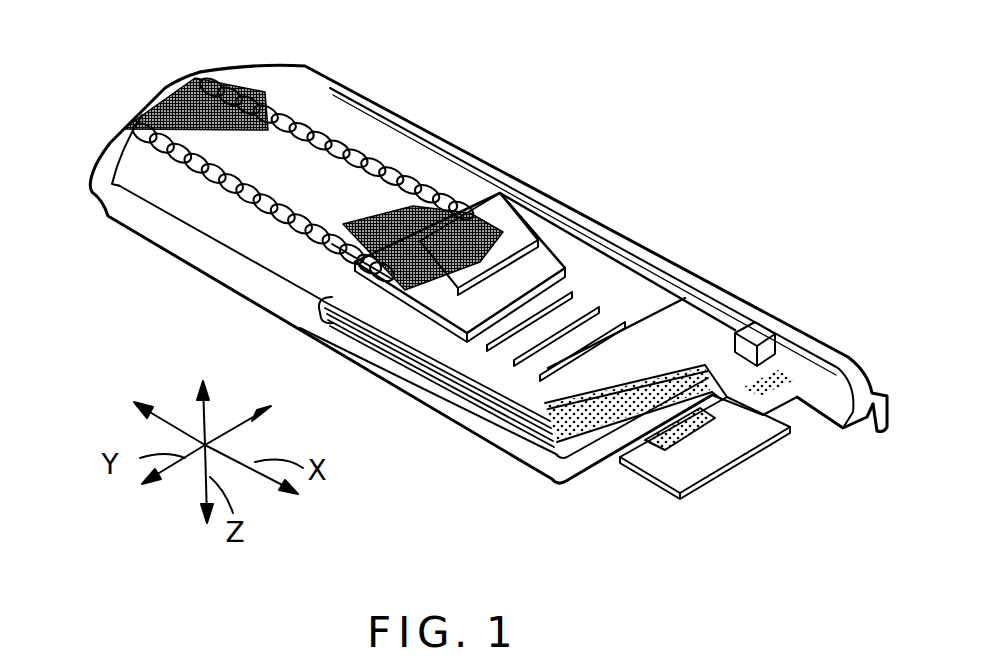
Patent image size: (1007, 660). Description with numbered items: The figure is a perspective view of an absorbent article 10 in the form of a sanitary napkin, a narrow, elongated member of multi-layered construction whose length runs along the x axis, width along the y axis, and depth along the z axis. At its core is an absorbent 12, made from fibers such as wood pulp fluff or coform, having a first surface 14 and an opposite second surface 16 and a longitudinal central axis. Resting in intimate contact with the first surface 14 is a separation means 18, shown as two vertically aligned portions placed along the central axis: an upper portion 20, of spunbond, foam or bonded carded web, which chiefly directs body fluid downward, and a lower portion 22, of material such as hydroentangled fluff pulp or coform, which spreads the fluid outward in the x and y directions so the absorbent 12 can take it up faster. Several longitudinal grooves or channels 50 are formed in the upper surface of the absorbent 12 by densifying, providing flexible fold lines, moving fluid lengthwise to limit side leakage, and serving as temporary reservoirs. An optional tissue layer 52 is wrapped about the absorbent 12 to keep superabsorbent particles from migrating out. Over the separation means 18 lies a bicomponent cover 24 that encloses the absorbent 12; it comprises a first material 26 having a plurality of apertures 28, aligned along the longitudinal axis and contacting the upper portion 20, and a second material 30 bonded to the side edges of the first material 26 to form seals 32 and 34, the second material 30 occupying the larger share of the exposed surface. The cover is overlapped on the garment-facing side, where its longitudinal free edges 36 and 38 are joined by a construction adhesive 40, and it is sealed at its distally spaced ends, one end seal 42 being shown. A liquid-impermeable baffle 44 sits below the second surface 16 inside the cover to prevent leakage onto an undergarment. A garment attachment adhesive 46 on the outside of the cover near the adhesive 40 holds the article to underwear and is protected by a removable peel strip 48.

The absorbent article 10 is at (684, 74).
The absorbent 12 is at (663, 312).
The first surface 14 is at (631, 279).
The second surface 16 is at (698, 338).
The separation means 18 is at (327, 320).
The upper portion 20 is at (370, 305).
The lower portion 22 is at (428, 355).
The bicomponent cover 24 is at (352, 100).
The first material 26 is at (293, 147).
The apertures 28 is at (197, 90).
The second material 30 is at (442, 148).
The seal 32 is at (345, 142).
The seal 34 is at (224, 187).
The longitudinal free edge 36 is at (717, 376).
The longitudinal free edge 38 is at (643, 440).
The construction adhesive 40 is at (775, 442).
The end seal 42 is at (107, 140).
The liquid-impermeable baffle 44 is at (593, 467).
The garment attachment adhesive 46 is at (692, 440).
The peel strip 48 is at (727, 455).
The grooves or channels 50 is at (603, 307).
The tissue layer 52 is at (458, 358).